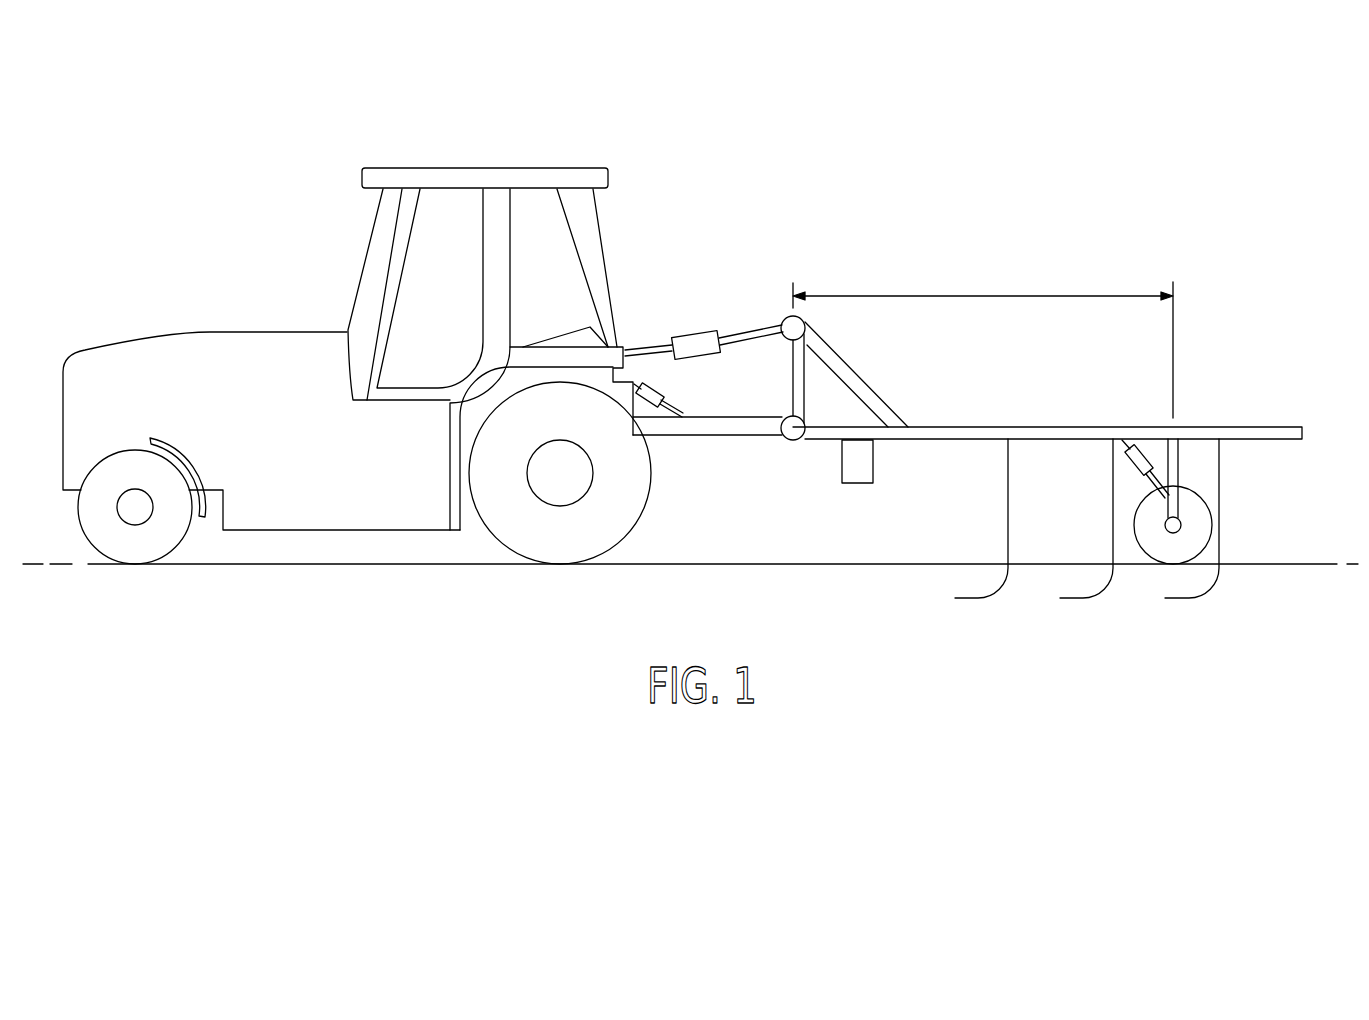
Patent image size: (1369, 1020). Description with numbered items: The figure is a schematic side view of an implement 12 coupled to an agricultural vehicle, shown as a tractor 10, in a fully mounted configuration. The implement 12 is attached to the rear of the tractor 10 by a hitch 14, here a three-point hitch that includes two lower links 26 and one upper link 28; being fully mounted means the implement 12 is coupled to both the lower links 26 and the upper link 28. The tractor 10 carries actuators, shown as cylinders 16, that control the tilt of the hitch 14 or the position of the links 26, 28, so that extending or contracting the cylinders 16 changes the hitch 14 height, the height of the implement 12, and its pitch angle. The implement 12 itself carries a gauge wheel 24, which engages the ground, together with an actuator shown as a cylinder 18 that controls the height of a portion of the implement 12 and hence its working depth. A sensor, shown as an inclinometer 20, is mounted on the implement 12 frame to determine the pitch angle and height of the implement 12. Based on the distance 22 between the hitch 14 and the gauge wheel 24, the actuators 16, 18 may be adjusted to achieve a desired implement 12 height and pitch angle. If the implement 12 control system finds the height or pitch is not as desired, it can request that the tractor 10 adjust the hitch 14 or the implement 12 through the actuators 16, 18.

The tractor 10 is at (278, 206).
The implement 12 is at (1238, 301).
The hitch 14 is at (776, 458).
The cylinder 16 is at (695, 330).
The cylinder 18 is at (1137, 468).
The inclinometer 20 is at (858, 483).
The distance 22 is at (983, 295).
The gauge wheel 24 is at (1213, 523).
The lower link 26 is at (715, 437).
The upper link 28 is at (752, 342).